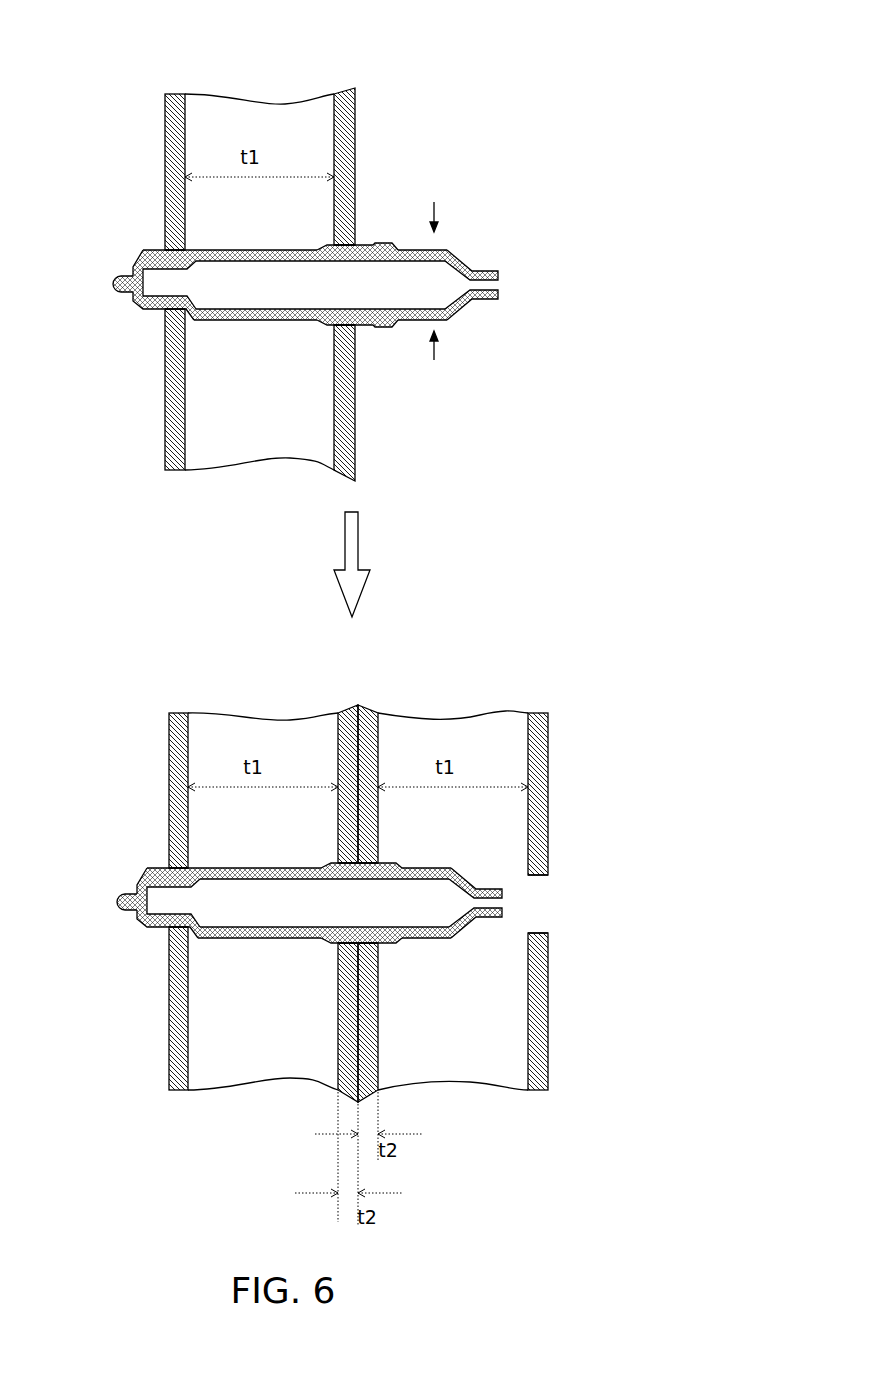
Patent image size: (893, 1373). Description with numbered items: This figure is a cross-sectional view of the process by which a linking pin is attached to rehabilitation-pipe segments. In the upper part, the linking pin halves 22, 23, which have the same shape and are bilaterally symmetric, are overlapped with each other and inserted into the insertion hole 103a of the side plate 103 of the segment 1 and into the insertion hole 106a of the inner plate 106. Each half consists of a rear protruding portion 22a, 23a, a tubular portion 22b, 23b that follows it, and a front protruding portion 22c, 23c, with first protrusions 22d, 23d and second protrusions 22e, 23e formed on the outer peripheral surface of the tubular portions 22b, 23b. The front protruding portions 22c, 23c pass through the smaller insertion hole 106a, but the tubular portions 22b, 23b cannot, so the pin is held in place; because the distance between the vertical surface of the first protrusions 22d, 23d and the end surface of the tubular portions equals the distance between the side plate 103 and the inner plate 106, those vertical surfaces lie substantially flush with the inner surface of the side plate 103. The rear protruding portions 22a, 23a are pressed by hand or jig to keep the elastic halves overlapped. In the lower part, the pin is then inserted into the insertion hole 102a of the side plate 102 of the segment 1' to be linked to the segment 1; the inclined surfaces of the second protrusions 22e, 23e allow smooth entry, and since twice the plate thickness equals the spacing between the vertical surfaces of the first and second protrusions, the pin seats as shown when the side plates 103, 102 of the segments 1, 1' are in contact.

The segment 1 is at (261, 546).
The segment to be linked 1' is at (453, 853).
The inner plate 106 is at (170, 94).
The insertion hole 106a is at (172, 247).
The side plate 103 is at (344, 94).
The insertion hole 103a is at (360, 245).
The side plate 102 is at (374, 713).
The insertion hole 102a is at (376, 862).
The linking pin half 22 is at (420, 204).
The protruding portion 22a is at (487, 271).
The tubular portion 22b is at (222, 249).
The protruding portion 22c is at (145, 250).
The first protrusion 22d is at (325, 247).
The second protrusion 22e is at (396, 863).
The linking pin half 23 is at (399, 351).
The protruding portion 23a is at (497, 299).
The tubular portion 23b is at (222, 320).
The protruding portion 23c is at (150, 310).
The first protrusion 23d is at (325, 322).
The second protrusion 23e is at (395, 940).